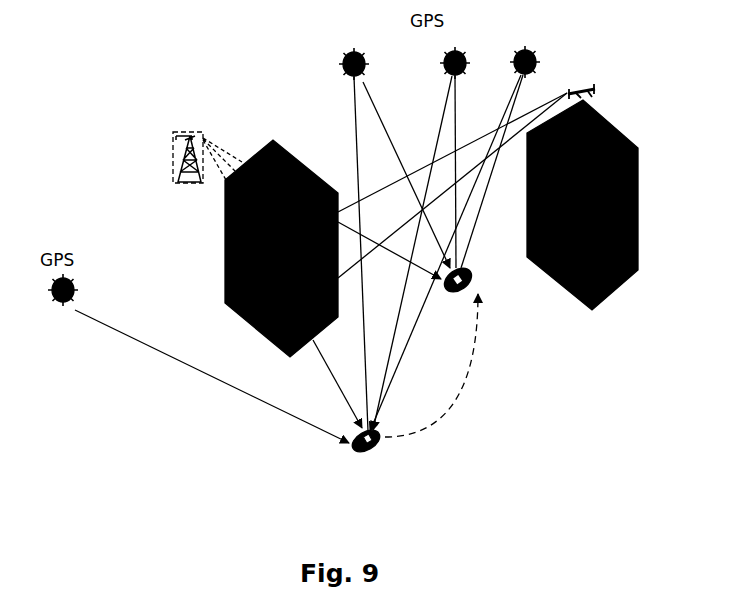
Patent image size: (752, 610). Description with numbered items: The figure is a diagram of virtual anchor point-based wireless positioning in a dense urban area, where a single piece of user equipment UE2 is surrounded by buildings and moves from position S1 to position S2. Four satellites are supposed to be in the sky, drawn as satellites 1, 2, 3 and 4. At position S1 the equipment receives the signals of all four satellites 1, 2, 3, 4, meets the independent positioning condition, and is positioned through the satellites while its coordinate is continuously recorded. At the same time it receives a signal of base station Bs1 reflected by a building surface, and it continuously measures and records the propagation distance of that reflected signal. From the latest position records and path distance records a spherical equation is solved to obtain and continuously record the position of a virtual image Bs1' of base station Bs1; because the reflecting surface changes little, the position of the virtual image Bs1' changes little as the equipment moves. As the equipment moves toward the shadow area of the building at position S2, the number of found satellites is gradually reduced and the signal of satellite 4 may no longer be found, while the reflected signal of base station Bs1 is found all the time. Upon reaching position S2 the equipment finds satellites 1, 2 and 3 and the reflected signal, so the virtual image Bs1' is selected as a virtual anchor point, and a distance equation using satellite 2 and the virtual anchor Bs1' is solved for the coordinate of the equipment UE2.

The GPS satellite GPS1 1 is at (347, 64).
The GPS satellite GPS2 2 is at (448, 63).
The GPS satellite GPS3 3 is at (521, 62).
The GPS satellite GPS4 4 is at (53, 290).
The base station Bs1 is at (599, 85).
The virtual image of base station Bs1 Bs1' is at (210, 140).
The position S1 is at (358, 452).
The position S2 is at (470, 280).
The user equipment UE2 is at (378, 448).